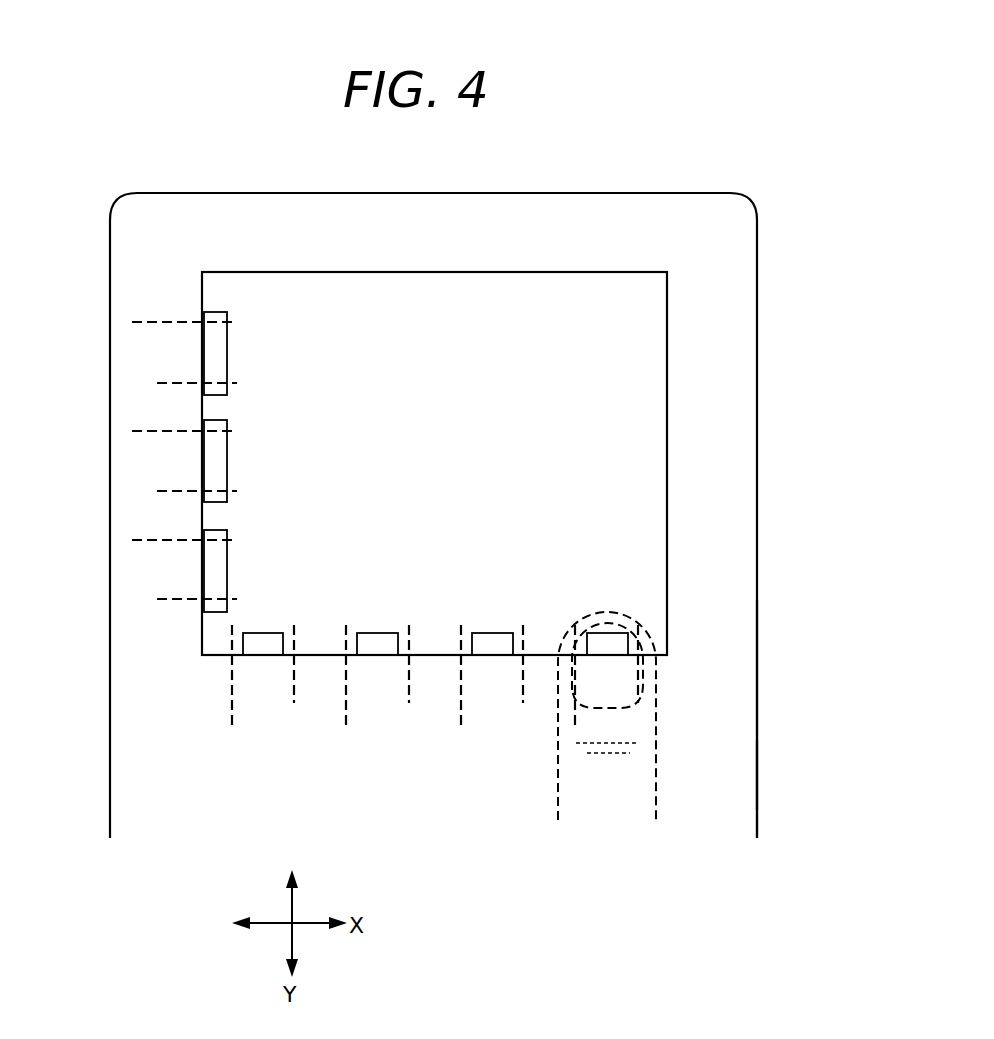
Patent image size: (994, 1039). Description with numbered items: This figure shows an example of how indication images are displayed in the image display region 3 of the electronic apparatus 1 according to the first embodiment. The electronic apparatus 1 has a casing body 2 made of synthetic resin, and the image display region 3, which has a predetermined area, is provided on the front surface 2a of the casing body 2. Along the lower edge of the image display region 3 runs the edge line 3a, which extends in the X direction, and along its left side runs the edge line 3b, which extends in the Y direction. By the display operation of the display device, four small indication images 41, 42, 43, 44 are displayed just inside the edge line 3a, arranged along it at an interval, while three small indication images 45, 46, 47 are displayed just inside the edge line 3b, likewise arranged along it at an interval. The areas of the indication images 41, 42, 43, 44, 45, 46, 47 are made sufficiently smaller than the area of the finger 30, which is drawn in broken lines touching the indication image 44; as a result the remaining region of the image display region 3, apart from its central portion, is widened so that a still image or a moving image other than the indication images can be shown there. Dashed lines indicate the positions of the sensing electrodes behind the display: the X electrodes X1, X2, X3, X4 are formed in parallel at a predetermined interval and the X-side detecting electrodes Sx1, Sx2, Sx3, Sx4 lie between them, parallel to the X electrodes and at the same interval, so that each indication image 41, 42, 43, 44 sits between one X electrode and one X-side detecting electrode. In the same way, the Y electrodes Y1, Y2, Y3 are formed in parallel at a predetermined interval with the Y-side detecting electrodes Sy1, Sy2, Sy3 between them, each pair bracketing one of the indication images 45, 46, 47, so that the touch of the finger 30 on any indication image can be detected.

The electronic apparatus 1 is at (772, 368).
The casing body 2 is at (763, 720).
The front surface 2a is at (730, 775).
The image display region 3 is at (636, 420).
The edge line 3a is at (432, 653).
The edge line 3b is at (204, 296).
The finger 30 is at (653, 708).
The indication image 41 is at (262, 632).
The indication image 42 is at (375, 632).
The indication image 43 is at (490, 633).
The indication image 44 is at (604, 633).
The indication image 45 is at (227, 350).
The indication image 46 is at (227, 460).
The indication image 47 is at (227, 567).
The X electrode X1 is at (232, 700).
The X electrode X2 is at (346, 700).
The X electrode X3 is at (461, 702).
The X electrode X4 is at (575, 717).
The X-side detecting electrode Sx1 is at (295, 684).
The X-side detecting electrode Sx2 is at (409, 684).
The X-side detecting electrode Sx3 is at (523, 684).
The X-side detecting electrode Sx4 is at (640, 702).
The Y electrode Y1 is at (170, 322).
The Y electrode Y2 is at (170, 431).
The Y electrode Y3 is at (170, 540).
The Y-side detecting electrode Sy1 is at (175, 383).
The Y-side detecting electrode Sy2 is at (175, 491).
The Y-side detecting electrode Sy3 is at (175, 599).